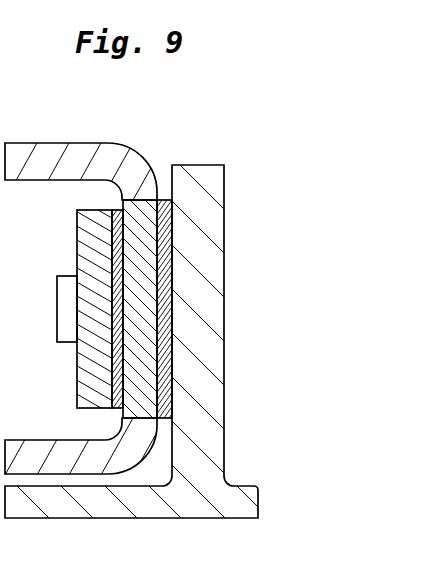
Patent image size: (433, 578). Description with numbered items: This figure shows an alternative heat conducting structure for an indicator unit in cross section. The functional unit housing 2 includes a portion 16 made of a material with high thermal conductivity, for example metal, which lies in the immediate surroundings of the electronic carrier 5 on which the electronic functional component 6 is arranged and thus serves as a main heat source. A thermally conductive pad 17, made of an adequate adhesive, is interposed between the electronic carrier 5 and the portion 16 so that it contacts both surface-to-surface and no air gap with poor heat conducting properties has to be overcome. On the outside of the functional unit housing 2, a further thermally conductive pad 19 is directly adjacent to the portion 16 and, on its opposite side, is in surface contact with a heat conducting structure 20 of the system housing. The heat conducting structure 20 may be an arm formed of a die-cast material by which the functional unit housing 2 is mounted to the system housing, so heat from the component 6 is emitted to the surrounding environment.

The functional unit housing 2 is at (72, 163).
The electronic carrier 5 is at (88, 240).
The electronic functional component 6 is at (65, 325).
The portion made of a material with high thermal conductivity 16 is at (150, 215).
The thermally conductive pad 17 is at (118, 212).
The further thermally conductive pad 19 is at (168, 273).
The heat conducting structure 20 is at (207, 360).